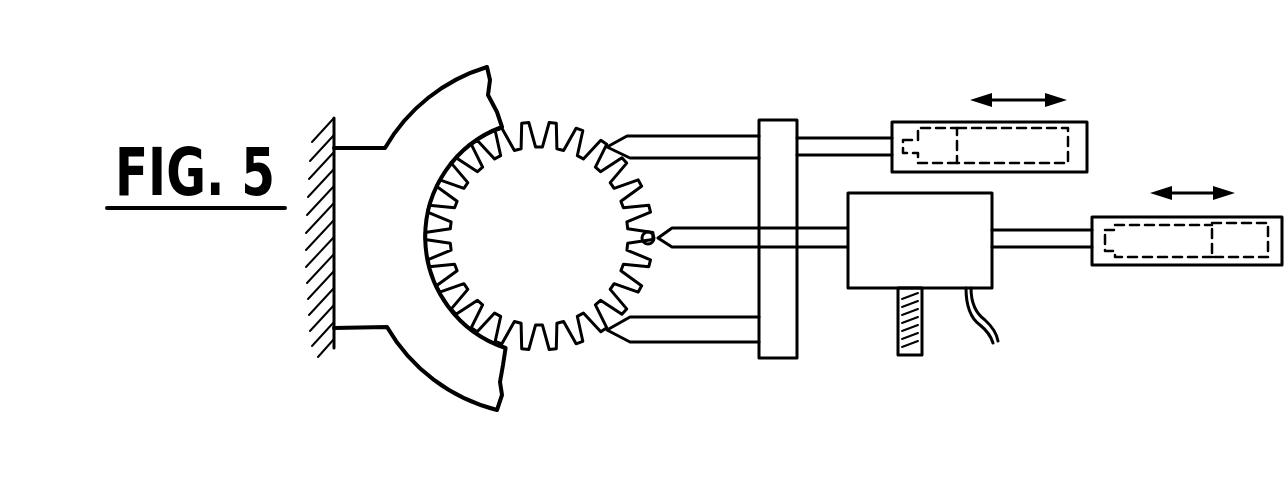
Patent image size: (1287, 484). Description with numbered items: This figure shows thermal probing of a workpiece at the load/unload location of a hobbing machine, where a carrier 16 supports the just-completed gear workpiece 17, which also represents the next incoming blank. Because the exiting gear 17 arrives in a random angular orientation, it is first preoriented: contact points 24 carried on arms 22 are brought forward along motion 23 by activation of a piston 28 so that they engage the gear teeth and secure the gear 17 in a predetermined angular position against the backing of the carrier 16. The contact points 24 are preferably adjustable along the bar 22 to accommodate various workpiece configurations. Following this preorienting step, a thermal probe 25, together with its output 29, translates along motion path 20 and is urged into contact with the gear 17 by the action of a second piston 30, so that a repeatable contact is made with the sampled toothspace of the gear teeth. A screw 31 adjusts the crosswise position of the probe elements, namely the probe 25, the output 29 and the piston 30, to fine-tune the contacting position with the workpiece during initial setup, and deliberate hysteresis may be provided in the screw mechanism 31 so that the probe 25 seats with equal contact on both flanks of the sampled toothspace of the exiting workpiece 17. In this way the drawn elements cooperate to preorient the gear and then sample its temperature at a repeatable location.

The carrier 16 is at (428, 113).
The workpiece 17 is at (552, 307).
The motion path 20 is at (1190, 190).
The arm 22 is at (777, 132).
The forward motion 23 is at (1021, 95).
The contact points 24 is at (637, 143).
The thermal probe 25 is at (658, 241).
The piston 28 is at (943, 122).
The output 29 is at (995, 277).
The piston 30 is at (1220, 248).
The screw 31 is at (895, 330).